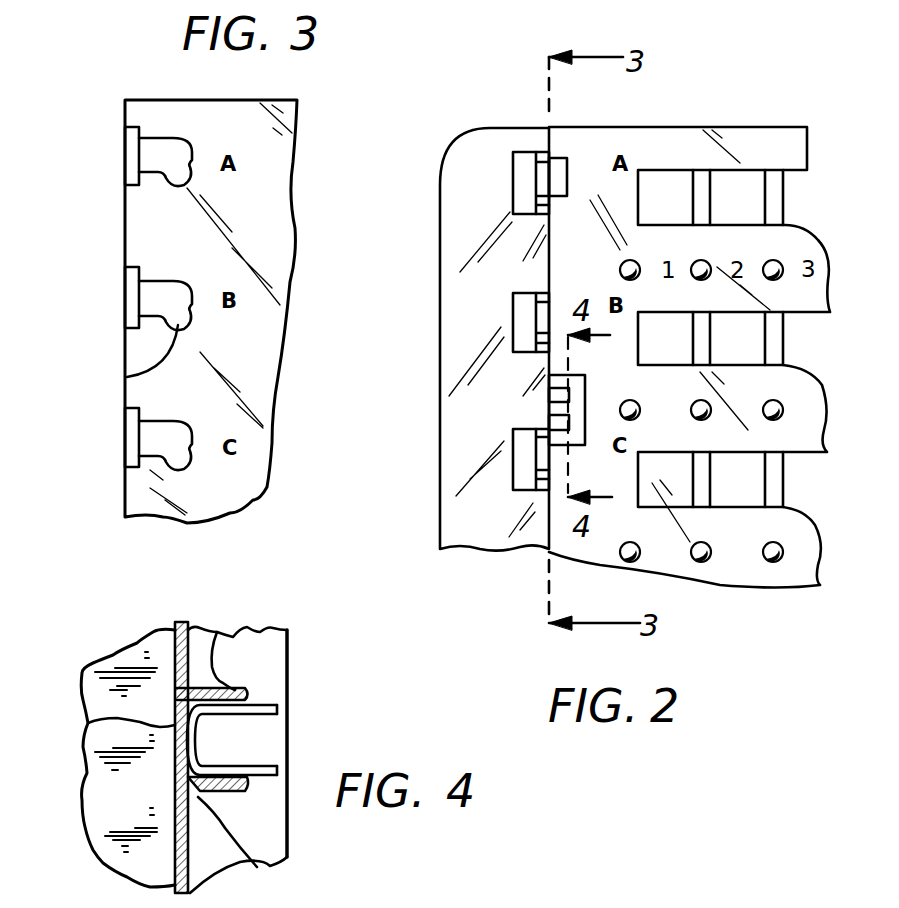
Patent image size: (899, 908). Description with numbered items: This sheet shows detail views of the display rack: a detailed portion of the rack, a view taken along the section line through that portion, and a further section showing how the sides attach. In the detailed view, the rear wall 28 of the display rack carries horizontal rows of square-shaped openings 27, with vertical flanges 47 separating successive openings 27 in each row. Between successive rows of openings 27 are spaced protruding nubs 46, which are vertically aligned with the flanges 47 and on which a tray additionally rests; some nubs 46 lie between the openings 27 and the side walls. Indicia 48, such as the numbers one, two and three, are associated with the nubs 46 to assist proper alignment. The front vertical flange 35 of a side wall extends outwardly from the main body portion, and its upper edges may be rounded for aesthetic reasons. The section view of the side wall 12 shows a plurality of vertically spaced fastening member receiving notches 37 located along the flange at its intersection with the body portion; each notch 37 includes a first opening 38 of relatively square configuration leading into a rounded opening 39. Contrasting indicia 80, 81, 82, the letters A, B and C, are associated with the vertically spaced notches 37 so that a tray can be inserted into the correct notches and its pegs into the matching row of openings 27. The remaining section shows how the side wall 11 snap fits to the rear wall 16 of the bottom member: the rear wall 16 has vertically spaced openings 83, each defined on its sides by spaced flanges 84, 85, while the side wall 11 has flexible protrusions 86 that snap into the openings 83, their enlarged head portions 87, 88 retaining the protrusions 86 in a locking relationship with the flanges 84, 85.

In FIG. 4, the side wall 11 is at (88, 803).
In FIG. 3, the side wall 12 is at (299, 248).
In FIG. 2, the rear wall 16 is at (797, 392).
In FIG. 4, the rear wall 16 is at (260, 675).
In FIG. 2, the openings 27 is at (668, 188).
In FIG. 2, the rear wall 28 is at (578, 150).
In FIG. 2, the front vertical flange 35 is at (472, 165).
In FIG. 3, the fastening member receiving notches 37 is at (126, 153).
In FIG. 2, the fastening member receiving notches 37 is at (540, 321).
In FIG. 3, the first opening 38 is at (125, 283).
In FIG. 2, the first opening 38 is at (567, 410).
In FIG. 3, the rounded opening 39 is at (127, 377).
In FIG. 2, the nubs 46 is at (701, 260).
In FIG. 2, the vertical flanges 47 is at (705, 197).
In FIG. 2, the indicia 48 is at (658, 268).
In FIG. 3, the contrasting indicia 80 is at (262, 157).
In FIG. 3, the contrasting indicia 81 is at (250, 305).
In FIG. 3, the contrasting indicia 82 is at (250, 445).
In FIG. 4, the openings 83 is at (88, 733).
In FIG. 4, the flange 84 is at (222, 632).
In FIG. 4, the flange 85 is at (257, 867).
In FIG. 4, the flexible protrusions 86 is at (201, 753).
In FIG. 4, the enlarged head portion 87 is at (263, 707).
In FIG. 4, the enlarged head portion 88 is at (273, 827).